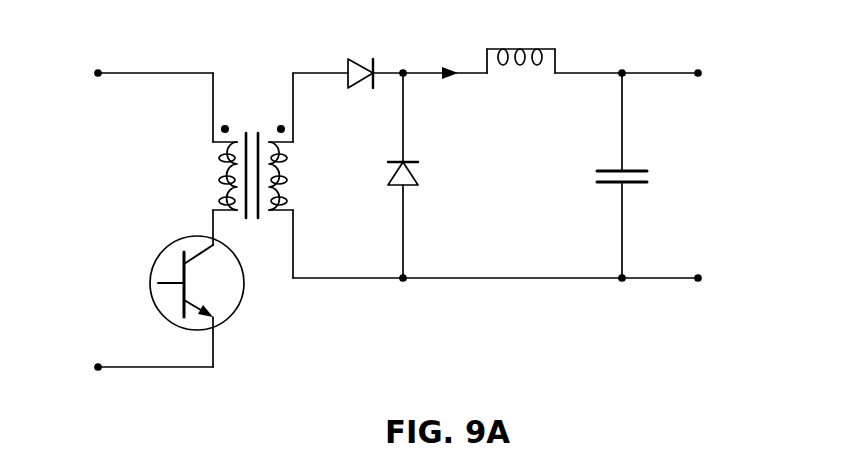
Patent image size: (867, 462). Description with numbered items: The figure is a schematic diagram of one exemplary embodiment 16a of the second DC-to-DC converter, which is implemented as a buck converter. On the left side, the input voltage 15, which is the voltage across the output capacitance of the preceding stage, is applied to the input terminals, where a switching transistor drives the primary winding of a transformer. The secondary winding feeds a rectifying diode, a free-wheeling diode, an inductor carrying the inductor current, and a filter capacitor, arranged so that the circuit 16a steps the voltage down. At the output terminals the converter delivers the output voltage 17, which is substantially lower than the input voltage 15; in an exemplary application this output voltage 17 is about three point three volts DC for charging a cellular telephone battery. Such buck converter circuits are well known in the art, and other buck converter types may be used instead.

The input voltage 15 is at (129, 73).
The output voltage 17 is at (698, 76).
The second DC-to-DC converter embodiment 16a is at (726, 249).